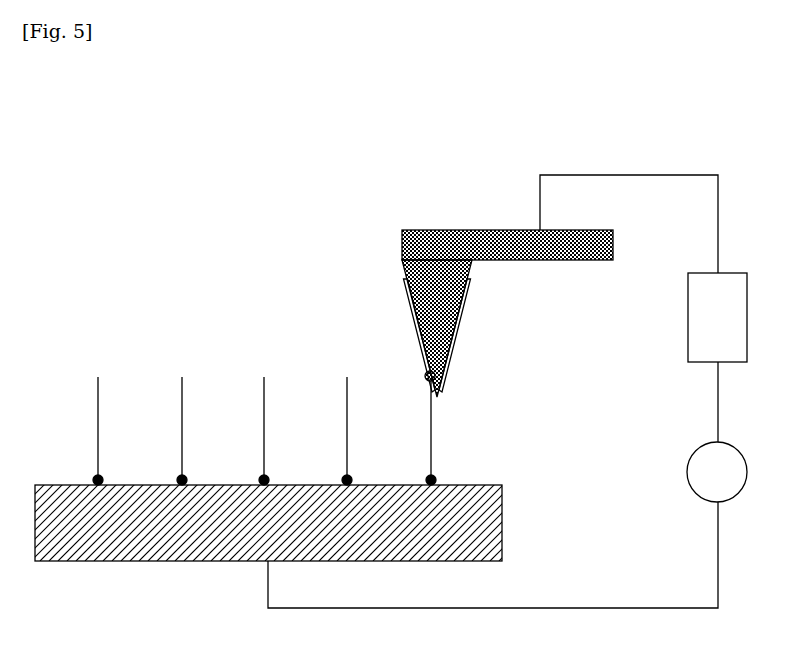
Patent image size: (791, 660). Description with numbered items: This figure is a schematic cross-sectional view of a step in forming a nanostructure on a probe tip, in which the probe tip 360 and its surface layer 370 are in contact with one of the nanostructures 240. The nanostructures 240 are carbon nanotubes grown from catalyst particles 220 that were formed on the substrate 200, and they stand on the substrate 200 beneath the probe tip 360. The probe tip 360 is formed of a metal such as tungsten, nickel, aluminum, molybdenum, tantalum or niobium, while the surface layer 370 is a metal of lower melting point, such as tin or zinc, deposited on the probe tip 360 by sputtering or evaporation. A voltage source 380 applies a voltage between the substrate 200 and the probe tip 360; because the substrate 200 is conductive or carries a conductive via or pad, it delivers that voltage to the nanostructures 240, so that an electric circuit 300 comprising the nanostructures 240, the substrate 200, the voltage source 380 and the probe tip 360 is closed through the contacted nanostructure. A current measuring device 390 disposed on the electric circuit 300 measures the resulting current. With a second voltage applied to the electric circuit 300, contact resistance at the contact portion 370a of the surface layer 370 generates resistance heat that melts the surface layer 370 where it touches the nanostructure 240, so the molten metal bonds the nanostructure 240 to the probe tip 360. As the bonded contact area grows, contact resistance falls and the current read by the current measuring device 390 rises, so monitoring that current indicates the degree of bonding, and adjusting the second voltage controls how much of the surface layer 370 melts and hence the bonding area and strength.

The substrate 200 is at (495, 527).
The catalyst particles 220 is at (437, 478).
The nanostructures 240 is at (486, 384).
The electric circuit 300 is at (507, 353).
The probe tip 360 is at (405, 268).
The surface layer 370 is at (410, 312).
The contact portion 370a is at (426, 375).
The voltage source 380 is at (694, 452).
The current measuring device 390 is at (717, 317).